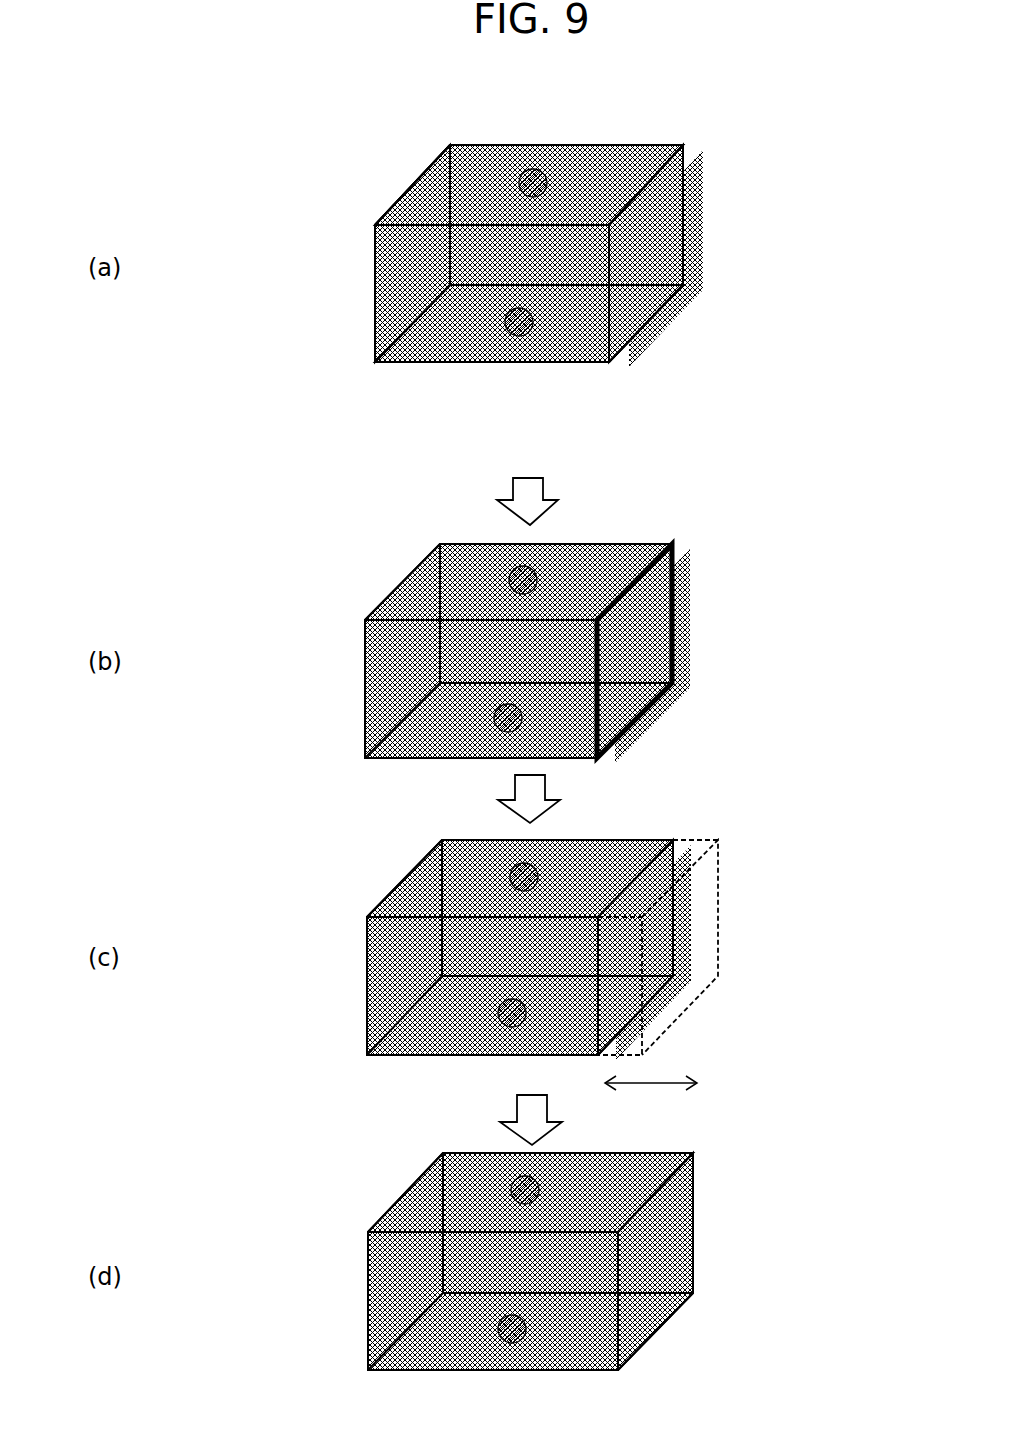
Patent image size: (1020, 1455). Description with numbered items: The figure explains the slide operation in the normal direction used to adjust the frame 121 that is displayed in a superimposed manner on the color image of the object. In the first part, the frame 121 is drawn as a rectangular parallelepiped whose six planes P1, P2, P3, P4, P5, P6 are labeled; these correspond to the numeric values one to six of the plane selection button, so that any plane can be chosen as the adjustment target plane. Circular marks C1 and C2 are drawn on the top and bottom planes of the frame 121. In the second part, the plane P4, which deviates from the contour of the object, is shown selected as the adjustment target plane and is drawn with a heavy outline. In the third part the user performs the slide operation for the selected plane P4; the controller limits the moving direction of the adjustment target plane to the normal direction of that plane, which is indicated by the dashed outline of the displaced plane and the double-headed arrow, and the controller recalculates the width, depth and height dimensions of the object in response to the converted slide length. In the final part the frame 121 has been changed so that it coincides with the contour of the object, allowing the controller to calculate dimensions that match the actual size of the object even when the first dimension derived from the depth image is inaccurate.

The frame 121 is at (375, 336).
The plane P1 is at (470, 140).
The plane P2 is at (497, 375).
The plane P3 is at (458, 330).
The plane P4 is at (650, 250).
The plane P5 is at (573, 188).
The plane P6 is at (353, 268).
The first circular region C1 is at (533, 169).
The second circular region C2 is at (519, 336).